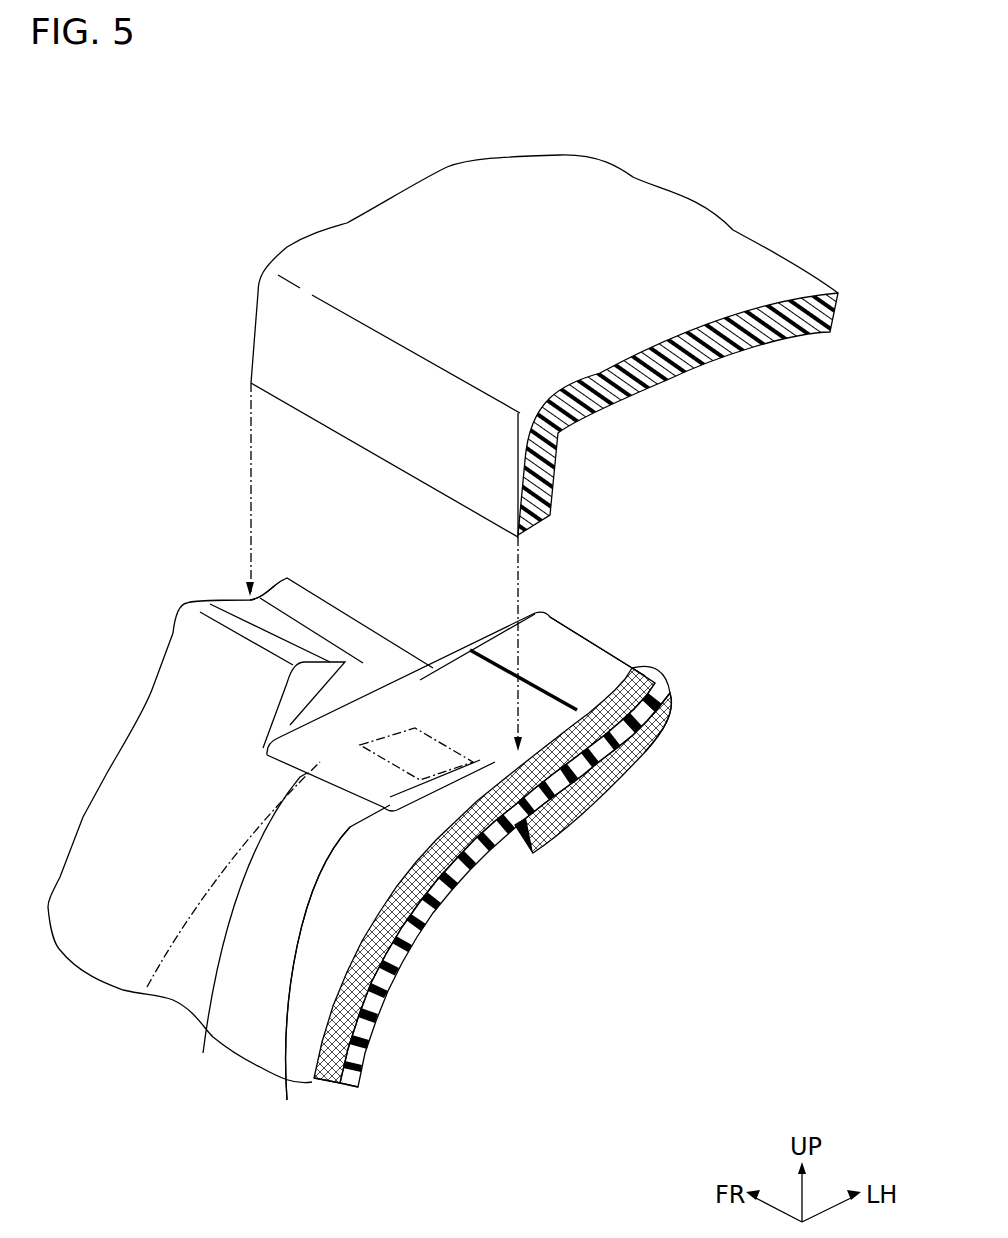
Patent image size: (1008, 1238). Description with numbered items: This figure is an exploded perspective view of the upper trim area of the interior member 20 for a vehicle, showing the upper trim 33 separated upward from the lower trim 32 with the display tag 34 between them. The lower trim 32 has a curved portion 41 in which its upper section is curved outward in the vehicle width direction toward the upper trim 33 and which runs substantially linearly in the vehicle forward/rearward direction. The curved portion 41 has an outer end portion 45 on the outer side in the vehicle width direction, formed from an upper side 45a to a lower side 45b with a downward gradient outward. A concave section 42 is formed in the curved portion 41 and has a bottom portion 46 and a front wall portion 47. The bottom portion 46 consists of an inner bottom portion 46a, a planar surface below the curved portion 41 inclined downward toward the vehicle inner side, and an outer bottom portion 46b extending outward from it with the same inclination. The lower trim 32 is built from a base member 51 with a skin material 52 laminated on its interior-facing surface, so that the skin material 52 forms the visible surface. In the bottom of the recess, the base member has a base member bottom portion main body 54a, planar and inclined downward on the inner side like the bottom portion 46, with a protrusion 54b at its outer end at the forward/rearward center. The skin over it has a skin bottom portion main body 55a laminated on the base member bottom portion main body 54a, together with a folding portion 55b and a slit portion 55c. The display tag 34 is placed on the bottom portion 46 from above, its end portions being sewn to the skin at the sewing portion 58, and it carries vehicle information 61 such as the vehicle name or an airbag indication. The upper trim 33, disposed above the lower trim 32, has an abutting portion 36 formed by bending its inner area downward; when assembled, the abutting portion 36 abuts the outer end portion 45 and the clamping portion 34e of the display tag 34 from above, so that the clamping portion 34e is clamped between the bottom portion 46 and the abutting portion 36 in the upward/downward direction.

The interior member 20 is at (295, 213).
The upper trim 33 is at (650, 204).
The abutting portion 36 is at (400, 425).
The curved portion 41 is at (215, 658).
The lower trim 32 is at (183, 808).
The base member 51 is at (436, 898).
The skin material 52 is at (418, 971).
The slit portion 55c is at (653, 690).
The folding portion 55b is at (640, 807).
The protrusion 54b is at (653, 753).
The base member bottom portion main body 54a is at (517, 826).
The upper side 45a is at (215, 612).
The outer end portion 45 is at (247, 603).
The lower side 45b is at (310, 632).
The front wall portion 47 is at (313, 683).
The display tag 34 is at (400, 694).
The clamping portion 34e is at (479, 710).
The sewing portion 58 is at (553, 710).
The outer bottom portion 46b is at (597, 660).
The vehicle information 61 is at (147, 987).
The concave section 42 is at (245, 925).
The bottom portion 46 is at (332, 977).
The skin bottom portion main body 55a is at (304, 1003).
The inner bottom portion 46a is at (388, 968).